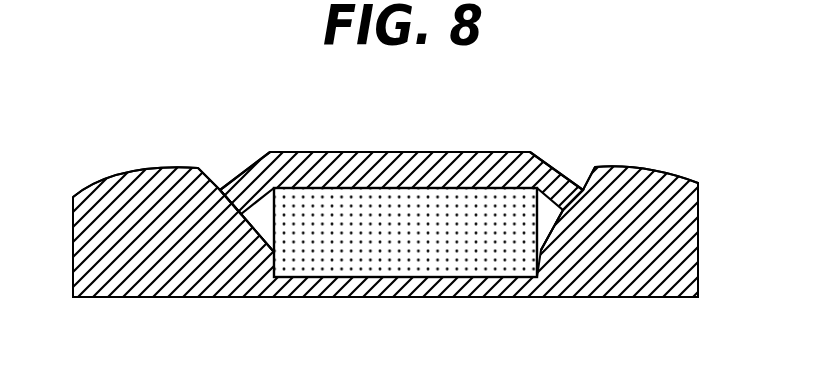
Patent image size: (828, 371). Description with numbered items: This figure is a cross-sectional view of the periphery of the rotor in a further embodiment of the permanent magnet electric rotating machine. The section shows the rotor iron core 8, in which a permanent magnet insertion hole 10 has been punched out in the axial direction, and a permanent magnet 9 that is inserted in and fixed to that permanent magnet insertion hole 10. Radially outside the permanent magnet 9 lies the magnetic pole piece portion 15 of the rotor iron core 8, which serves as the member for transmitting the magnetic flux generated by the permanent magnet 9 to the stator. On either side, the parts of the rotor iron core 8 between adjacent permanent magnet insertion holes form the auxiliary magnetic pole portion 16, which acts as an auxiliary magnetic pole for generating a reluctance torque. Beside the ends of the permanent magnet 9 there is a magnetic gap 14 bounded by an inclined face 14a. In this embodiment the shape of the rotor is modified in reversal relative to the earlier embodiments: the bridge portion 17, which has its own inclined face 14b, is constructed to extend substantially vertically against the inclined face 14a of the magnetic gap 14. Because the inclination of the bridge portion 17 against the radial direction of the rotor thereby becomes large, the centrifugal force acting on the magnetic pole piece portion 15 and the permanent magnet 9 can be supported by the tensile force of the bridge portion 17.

The rotor iron core 8 is at (467, 346).
The permanent magnet 9 is at (435, 250).
The permanent magnet insertion hole 10 is at (321, 284).
The magnetic gap 14 is at (250, 243).
The inclined face of the magnetic gap 14a is at (231, 231).
The inclined face of the bridge portion 14b is at (220, 184).
The magnetic pole piece portion 15 is at (430, 151).
The auxiliary magnetic pole portion 16 is at (151, 168).
The bridge portion 17 is at (258, 163).